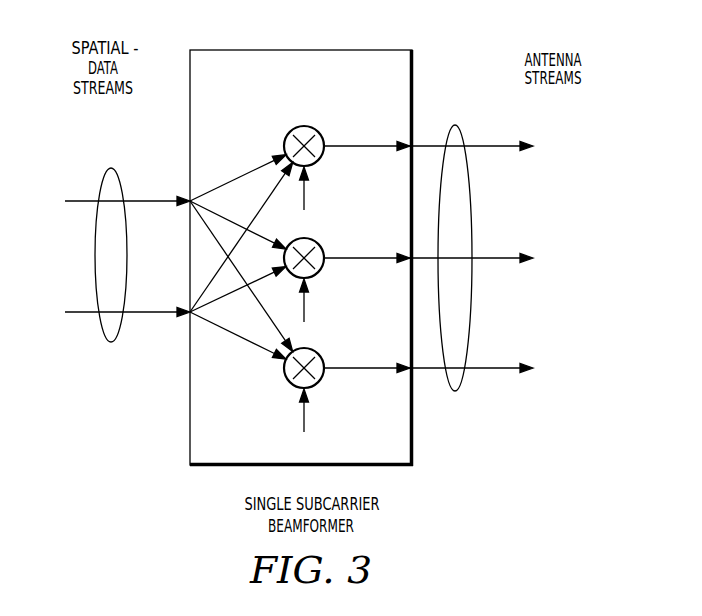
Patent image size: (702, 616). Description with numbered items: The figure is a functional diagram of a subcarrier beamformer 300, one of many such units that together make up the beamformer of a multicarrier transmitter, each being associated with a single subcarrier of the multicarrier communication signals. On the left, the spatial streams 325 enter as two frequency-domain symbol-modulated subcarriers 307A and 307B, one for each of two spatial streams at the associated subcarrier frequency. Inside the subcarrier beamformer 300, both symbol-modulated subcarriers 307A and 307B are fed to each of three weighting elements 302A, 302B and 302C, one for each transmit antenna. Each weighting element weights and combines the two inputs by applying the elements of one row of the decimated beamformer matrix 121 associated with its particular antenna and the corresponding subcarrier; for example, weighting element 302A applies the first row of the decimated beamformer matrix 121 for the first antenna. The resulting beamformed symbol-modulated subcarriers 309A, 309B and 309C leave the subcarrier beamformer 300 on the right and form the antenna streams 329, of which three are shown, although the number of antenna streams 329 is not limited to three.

The subcarrier beamformer 300 is at (200, 468).
The spatial stream 325 is at (113, 167).
The symbol-modulated subcarrier 307A is at (153, 203).
The symbol-modulated subcarrier 307B is at (153, 314).
The weighting element 302A is at (307, 127).
The weighting element 302B is at (307, 239).
The weighting element 302C is at (307, 349).
The decimated beamformer matrix 121 is at (306, 193).
The symbol-modulated subcarrier 309A is at (504, 142).
The symbol-modulated subcarrier 309B is at (504, 254).
The symbol-modulated subcarrier 309C is at (504, 365).
The antenna stream 329 is at (454, 124).